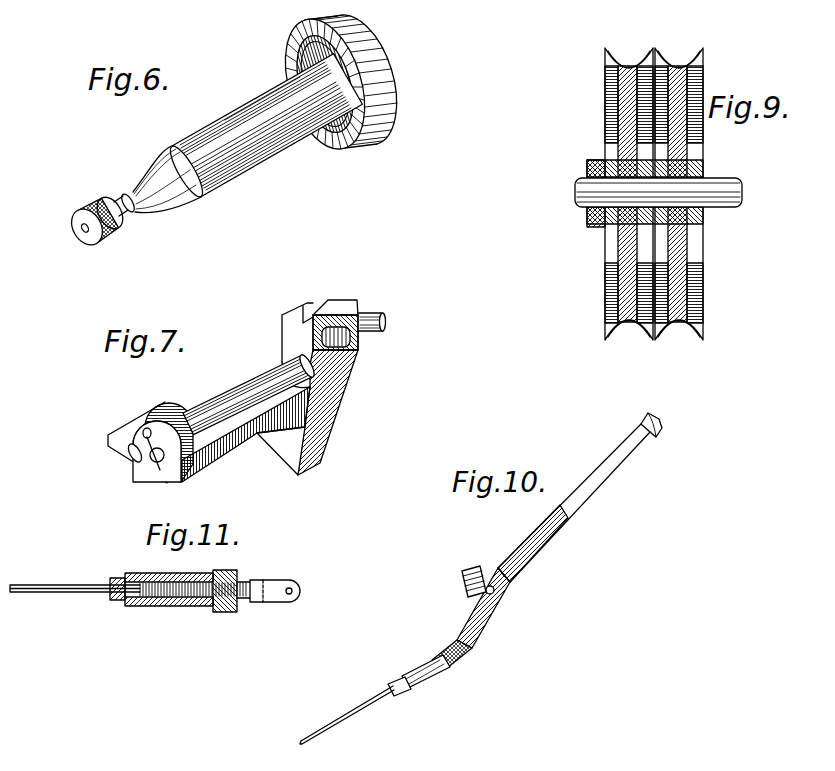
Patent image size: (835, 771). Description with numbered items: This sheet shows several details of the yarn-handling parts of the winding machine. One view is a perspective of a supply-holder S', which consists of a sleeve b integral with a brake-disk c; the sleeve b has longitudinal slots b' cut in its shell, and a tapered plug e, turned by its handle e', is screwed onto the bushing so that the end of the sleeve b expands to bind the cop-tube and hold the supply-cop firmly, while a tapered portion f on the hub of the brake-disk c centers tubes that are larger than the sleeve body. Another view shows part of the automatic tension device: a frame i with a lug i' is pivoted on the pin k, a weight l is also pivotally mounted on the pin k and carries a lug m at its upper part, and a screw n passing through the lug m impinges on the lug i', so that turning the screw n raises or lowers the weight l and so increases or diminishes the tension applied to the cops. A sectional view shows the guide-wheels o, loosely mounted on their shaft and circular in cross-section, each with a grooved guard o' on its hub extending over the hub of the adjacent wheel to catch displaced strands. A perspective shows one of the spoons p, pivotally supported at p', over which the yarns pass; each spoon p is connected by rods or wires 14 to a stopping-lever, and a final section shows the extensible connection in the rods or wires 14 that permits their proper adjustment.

In FIG. 6, the supply-holder S' is at (256, 98).
In FIG. 6, the brake-disk c is at (341, 83).
In FIG. 6, the inclined or tapered portion f is at (395, 95).
In FIG. 6, the sleeve b is at (206, 175).
In FIG. 6, the longitudinal slots b' is at (267, 125).
In FIG. 6, the tapered plug e is at (157, 181).
In FIG. 6, the handle e' is at (96, 217).
In FIG. 7, the frame i is at (246, 434).
In FIG. 7, the lug i' is at (325, 313).
In FIG. 7, the pin or shaft k is at (213, 402).
In FIG. 7, the weight l is at (335, 418).
In FIG. 7, the lug m is at (337, 299).
In FIG. 7, the screw n is at (360, 355).
In FIG. 9, the guide-wheels o is at (666, 112).
In FIG. 9, the guard o' is at (661, 194).
In FIG. 10, the spoon p is at (525, 554).
In FIG. 10, the pivot p' is at (478, 568).
In FIG. 10, the rods or wires 14 is at (347, 715).
In FIG. 11, the rods or wires 14 is at (88, 594).